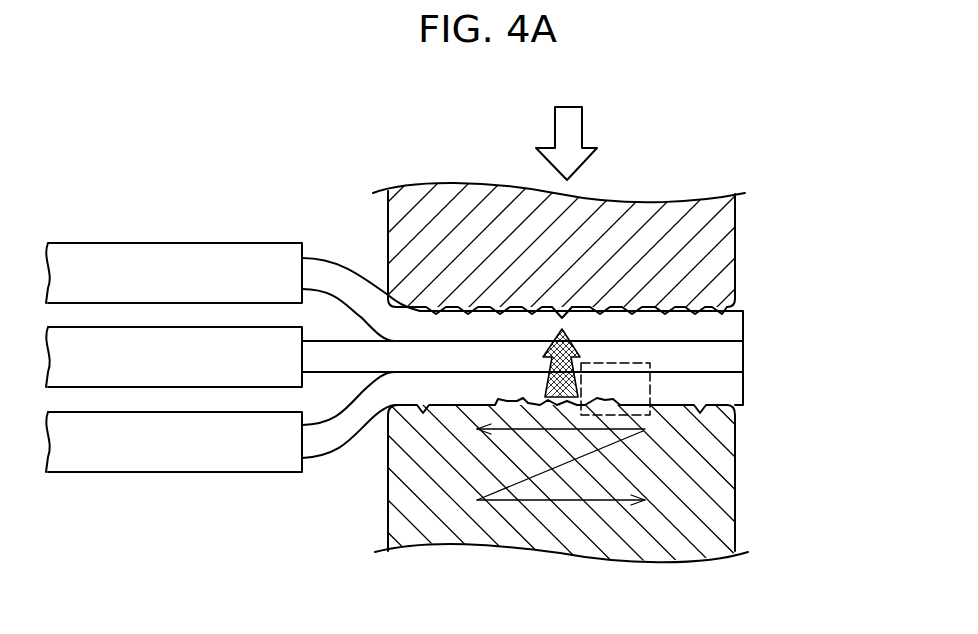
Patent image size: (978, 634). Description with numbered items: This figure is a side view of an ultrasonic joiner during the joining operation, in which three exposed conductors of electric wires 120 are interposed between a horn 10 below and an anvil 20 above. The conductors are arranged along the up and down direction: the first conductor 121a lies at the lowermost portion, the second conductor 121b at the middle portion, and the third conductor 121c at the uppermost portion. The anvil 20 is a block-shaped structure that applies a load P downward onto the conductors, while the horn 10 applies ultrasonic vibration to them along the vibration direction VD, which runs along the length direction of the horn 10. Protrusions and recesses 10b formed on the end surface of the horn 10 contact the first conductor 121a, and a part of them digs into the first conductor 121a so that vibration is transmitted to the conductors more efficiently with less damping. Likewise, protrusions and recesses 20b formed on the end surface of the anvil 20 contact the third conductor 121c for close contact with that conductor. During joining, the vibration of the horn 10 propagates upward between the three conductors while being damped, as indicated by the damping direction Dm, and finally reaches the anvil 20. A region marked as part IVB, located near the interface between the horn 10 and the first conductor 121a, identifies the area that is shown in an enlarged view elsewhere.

The horn 10 is at (712, 487).
The protrusions and recesses 10b is at (510, 386).
The anvil 20 is at (712, 247).
The protrusions and recesses 20b is at (426, 316).
The electric wires 120 is at (170, 440).
The first conductor 121a is at (745, 388).
The second conductor 121b is at (745, 354).
The third conductor 121c is at (745, 322).
The damping direction Dm is at (588, 356).
The vibration direction VD is at (571, 503).
The load P is at (566, 123).
The part IVB is at (652, 387).